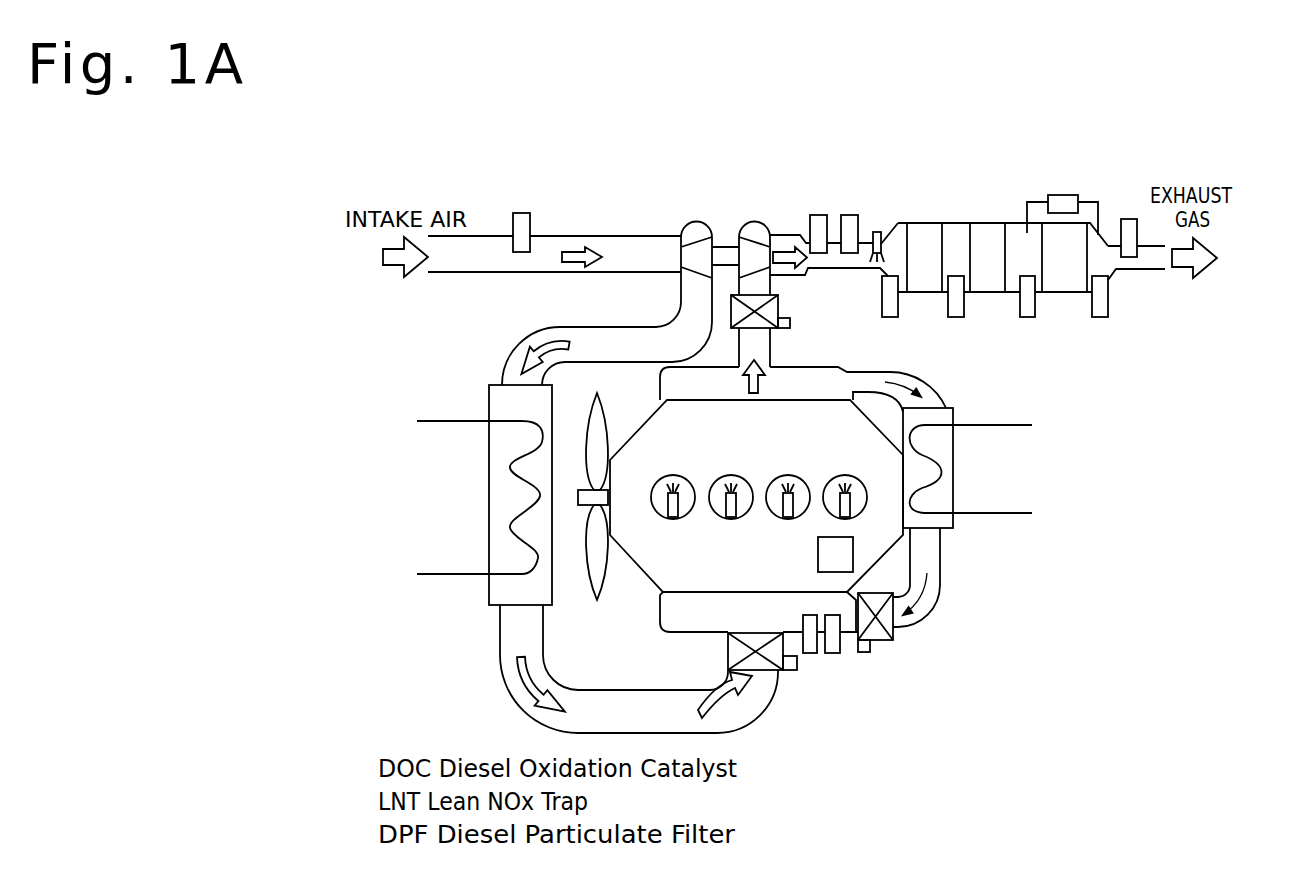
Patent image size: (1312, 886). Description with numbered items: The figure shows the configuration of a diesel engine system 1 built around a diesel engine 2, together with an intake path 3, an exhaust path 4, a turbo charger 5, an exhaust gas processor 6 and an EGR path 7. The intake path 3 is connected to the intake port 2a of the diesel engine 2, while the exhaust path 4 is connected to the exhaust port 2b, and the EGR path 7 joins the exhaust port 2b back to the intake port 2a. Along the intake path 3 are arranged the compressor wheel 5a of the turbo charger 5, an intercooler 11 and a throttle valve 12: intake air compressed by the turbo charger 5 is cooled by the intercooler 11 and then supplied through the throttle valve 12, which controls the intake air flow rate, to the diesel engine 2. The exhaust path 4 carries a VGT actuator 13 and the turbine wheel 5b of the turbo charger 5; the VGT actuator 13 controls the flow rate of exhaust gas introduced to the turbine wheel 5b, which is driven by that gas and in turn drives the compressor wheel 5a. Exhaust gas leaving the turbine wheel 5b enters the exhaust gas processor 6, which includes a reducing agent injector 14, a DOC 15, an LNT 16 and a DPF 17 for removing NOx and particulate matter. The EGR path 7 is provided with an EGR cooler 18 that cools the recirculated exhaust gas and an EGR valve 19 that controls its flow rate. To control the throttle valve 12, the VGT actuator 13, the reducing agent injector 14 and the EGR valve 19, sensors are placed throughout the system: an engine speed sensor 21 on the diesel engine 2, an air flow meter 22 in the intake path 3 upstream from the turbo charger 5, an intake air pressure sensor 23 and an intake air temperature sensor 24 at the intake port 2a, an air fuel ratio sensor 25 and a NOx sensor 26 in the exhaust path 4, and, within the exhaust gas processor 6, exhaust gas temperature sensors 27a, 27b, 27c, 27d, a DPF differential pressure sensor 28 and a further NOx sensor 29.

The diesel engine system 1 is at (633, 116).
The diesel engine 2 is at (812, 453).
The intake port 2a is at (670, 632).
The exhaust port 2b is at (660, 383).
The intake path 3 is at (517, 647).
The exhaust path 4 is at (790, 235).
The turbo charger 5 is at (767, 163).
The compressor wheel 5a is at (697, 237).
The turbine wheel 5b is at (748, 237).
The exhaust gas processor 6 is at (1004, 135).
The EGR path 7 is at (940, 590).
The intercooler 11 is at (488, 535).
The throttle valve 12 is at (758, 670).
The VGT actuator 13 is at (790, 323).
The reducing agent injector 14 is at (876, 232).
The DOC 15 is at (925, 223).
The LNT 16 is at (988, 223).
The DPF 17 is at (1067, 292).
The EGR cooler 18 is at (953, 455).
The EGR valve 19 is at (893, 628).
The engine speed sensor 21 is at (818, 557).
The air flow meter 22 is at (522, 213).
The intake air pressure sensor 23 is at (810, 653).
The intake air temperature sensor 24 is at (833, 653).
The air fuel ratio sensor 25 is at (818, 215).
The NOx sensor 26 is at (849, 215).
The exhaust gas temperature sensor 27a is at (898, 305).
The exhaust gas temperature sensor 27b is at (964, 305).
The exhaust gas temperature sensor 27c is at (1028, 317).
The exhaust gas temperature sensor 27d is at (1108, 305).
The DPF differential pressure sensor 28 is at (1061, 195).
The NOx sensor 29 is at (1128, 219).